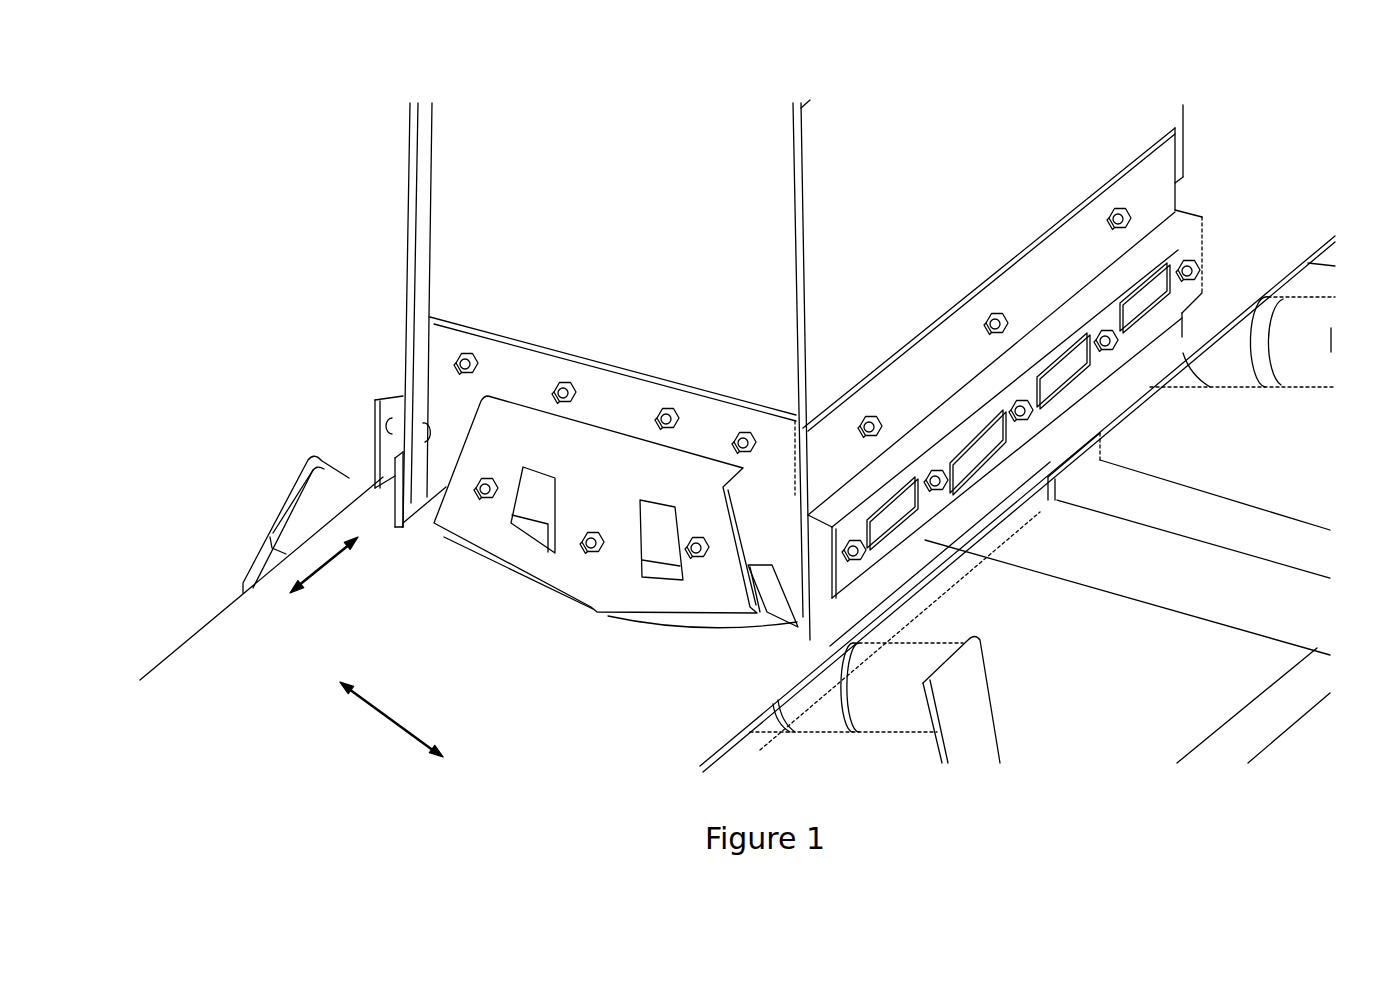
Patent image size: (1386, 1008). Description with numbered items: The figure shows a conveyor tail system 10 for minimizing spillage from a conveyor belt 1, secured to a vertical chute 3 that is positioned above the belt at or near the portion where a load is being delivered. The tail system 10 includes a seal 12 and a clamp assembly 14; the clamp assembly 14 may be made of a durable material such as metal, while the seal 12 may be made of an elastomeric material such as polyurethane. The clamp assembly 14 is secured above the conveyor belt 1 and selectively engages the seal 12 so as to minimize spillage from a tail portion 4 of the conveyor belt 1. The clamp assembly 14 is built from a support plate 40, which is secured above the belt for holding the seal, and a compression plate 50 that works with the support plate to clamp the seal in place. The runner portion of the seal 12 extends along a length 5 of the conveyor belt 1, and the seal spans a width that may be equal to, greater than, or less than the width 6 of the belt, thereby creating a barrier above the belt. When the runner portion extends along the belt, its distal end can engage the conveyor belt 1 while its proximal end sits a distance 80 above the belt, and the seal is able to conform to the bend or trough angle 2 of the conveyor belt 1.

The conveyor belt 1 is at (261, 568).
The trough angle 2 is at (653, 643).
The vertical chute 3 is at (793, 370).
The tail portion 4 is at (988, 504).
The length 5 is at (324, 568).
The width 6 is at (391, 719).
The conveyor tail system 10 is at (424, 406).
The seal 12 is at (770, 600).
The clamp assembly 14 is at (610, 376).
The support plate 40 is at (973, 328).
The compression plate 50 is at (595, 504).
The distance 80 is at (789, 634).